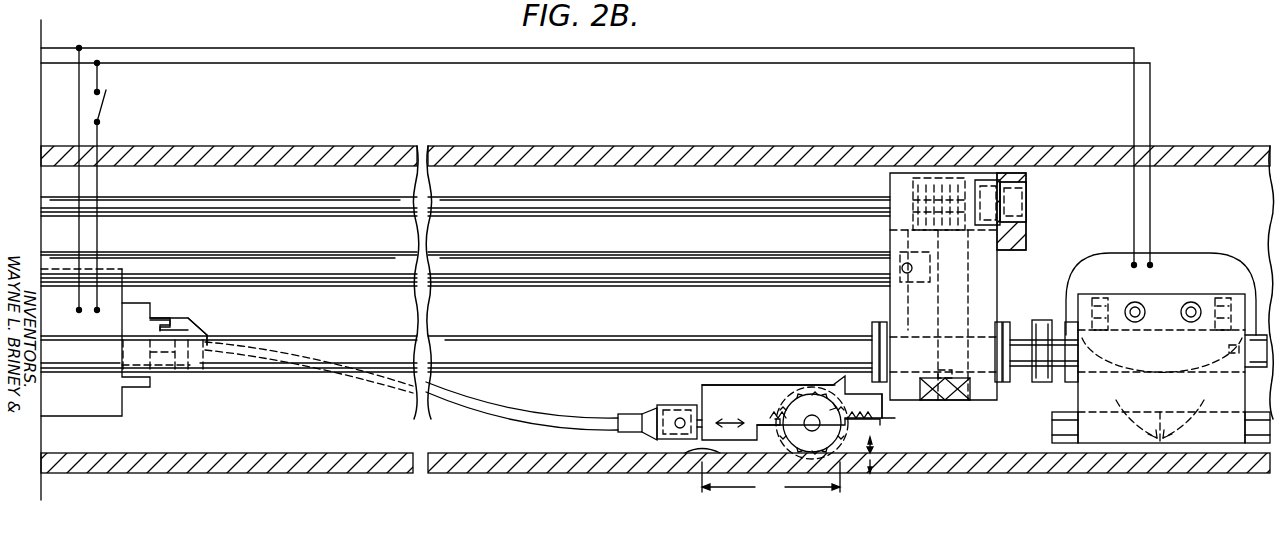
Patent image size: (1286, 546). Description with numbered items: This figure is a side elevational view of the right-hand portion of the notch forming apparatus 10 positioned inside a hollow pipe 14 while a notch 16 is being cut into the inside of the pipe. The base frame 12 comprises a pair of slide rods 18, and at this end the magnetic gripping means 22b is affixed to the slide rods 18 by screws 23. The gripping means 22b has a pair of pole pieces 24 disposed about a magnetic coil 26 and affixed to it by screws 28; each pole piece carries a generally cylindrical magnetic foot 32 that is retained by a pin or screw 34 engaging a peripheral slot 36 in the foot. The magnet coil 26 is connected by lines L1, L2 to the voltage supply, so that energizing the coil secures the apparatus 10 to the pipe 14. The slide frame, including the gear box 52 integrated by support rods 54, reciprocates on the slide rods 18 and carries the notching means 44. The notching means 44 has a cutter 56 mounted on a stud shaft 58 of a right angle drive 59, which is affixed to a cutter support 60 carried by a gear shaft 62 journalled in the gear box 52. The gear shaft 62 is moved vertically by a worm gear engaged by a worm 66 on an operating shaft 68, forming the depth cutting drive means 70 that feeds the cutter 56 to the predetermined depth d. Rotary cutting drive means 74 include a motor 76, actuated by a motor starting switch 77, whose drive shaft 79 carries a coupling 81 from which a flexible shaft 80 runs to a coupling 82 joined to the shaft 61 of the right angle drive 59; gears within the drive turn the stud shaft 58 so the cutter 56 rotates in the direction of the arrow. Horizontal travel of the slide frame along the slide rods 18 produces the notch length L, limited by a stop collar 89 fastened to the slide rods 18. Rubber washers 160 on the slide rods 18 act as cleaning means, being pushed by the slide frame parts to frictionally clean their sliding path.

The notch forming apparatus 10 is at (798, 136).
The base frame 12 is at (307, 378).
The hollow pipe 14 is at (242, 475).
The notch 16 is at (698, 462).
The slide rods 18 is at (661, 340).
The magnetic gripping means 22b is at (1052, 412).
The screws 23 is at (1100, 295).
The pole pieces 24 is at (1170, 400).
The magnetic coil 26 is at (1172, 254).
The screws 28 is at (1190, 301).
The magnetic foot 32 is at (1063, 443).
The pin or screw 34 is at (1128, 411).
The peripheral slot 36 is at (1189, 413).
The notching means 44 is at (790, 380).
The gear box 52 is at (890, 236).
The support rods 54 is at (484, 252).
The cutter 56 is at (768, 418).
The stud shaft 58 is at (818, 418).
The right angle drive 59 is at (758, 385).
The cutter support 60 is at (883, 418).
The shaft 61 is at (702, 408).
The gear shaft 62 is at (975, 382).
The worm 66 is at (920, 175).
The operating shaft 68 is at (716, 216).
The reciprocating or depth cutting drive means 70 is at (583, 220).
The rotary cutting drive means 74 is at (124, 400).
The motor 76 is at (112, 318).
The motor starting switch 77 is at (108, 106).
The drive shaft 79 is at (203, 331).
The flexible shaft 80 is at (500, 412).
The coupling 81 is at (187, 360).
The coupling 82 is at (648, 416).
The stop collar 89 is at (1042, 322).
The rubber washers 160 is at (872, 330).
The line L1 is at (345, 48).
The line L2 is at (346, 63).